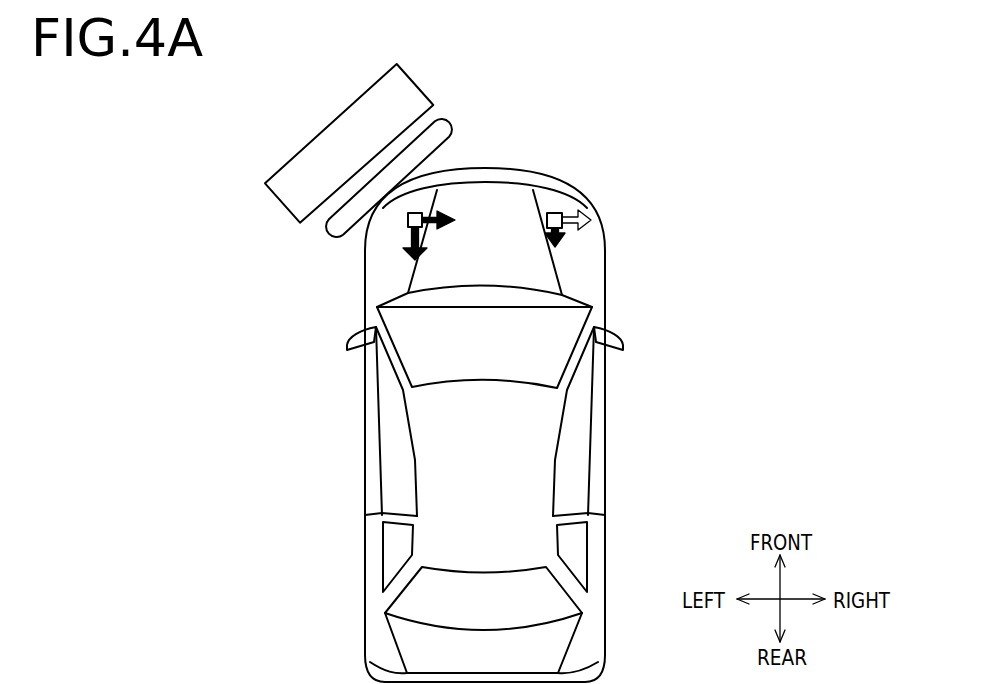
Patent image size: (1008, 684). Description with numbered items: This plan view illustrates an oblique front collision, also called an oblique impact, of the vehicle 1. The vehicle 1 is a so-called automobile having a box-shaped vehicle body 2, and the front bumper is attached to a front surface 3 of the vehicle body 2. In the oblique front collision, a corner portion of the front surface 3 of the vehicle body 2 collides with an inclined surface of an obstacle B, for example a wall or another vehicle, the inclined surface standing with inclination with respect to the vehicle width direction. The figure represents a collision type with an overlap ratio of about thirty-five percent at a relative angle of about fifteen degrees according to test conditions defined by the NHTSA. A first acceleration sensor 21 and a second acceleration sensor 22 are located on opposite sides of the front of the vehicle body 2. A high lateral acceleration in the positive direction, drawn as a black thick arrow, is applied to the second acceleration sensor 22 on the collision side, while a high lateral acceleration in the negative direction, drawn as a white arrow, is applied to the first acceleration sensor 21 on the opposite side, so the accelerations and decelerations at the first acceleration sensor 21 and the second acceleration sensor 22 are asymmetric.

The vehicle 1 is at (519, 398).
The vehicle body 2 is at (604, 460).
The front surface 3 is at (490, 170).
The first acceleration sensor 21 is at (557, 213).
The second acceleration sensor 22 is at (408, 220).
The obstacle B is at (447, 107).